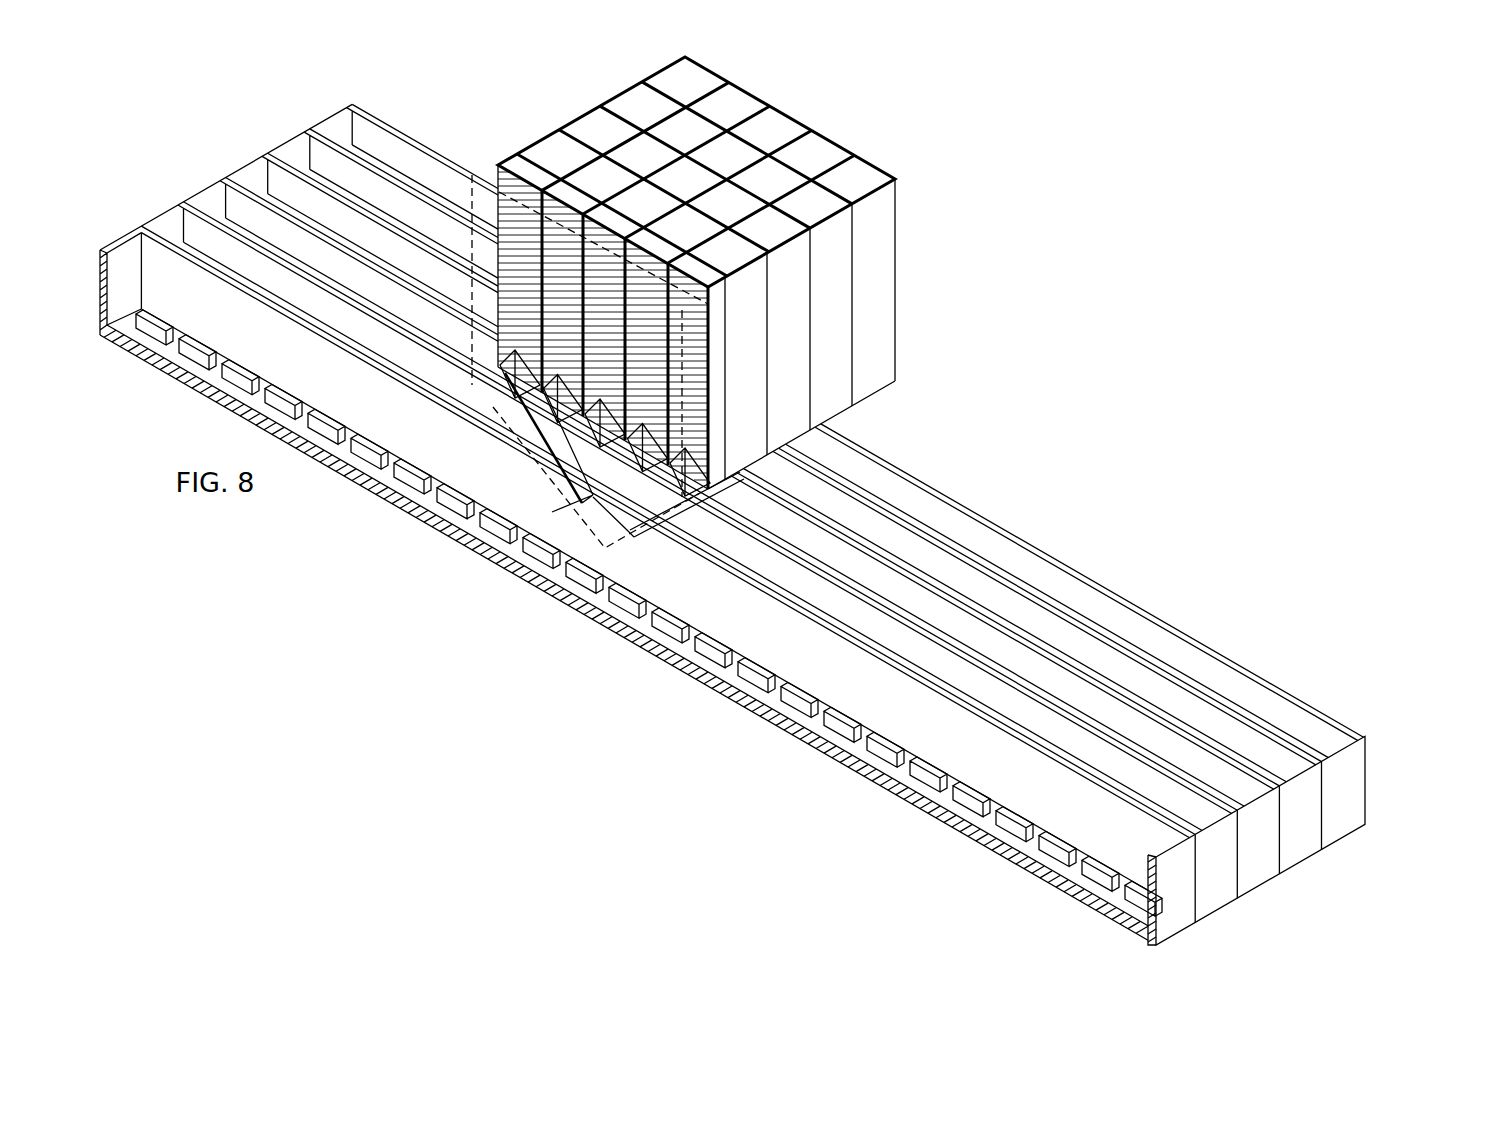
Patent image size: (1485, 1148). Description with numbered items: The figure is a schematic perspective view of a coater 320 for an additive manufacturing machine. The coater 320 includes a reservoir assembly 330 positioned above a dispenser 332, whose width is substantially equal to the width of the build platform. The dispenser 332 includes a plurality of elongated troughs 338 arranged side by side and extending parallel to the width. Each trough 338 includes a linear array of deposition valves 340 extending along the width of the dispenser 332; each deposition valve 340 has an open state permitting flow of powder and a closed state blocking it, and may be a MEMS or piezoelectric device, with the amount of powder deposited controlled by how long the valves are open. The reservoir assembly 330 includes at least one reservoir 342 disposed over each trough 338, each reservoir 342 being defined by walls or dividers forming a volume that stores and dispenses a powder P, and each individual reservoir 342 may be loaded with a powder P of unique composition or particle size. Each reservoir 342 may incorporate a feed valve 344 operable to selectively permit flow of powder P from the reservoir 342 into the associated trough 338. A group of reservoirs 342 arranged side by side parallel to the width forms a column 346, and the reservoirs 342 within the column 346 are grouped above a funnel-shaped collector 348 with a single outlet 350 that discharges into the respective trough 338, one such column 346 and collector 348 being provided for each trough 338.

The coater 320 is at (1122, 438).
The reservoir assembly 330 is at (707, 277).
The dispenser 332 is at (1388, 740).
The troughs 338 is at (283, 140).
The deposition valves 340 is at (935, 815).
The reservoir 342 is at (853, 163).
The feed valve 344 is at (640, 447).
The column 346 is at (492, 170).
The collector 348 is at (655, 505).
The outlet 350 is at (600, 520).
The powder P is at (727, 96).